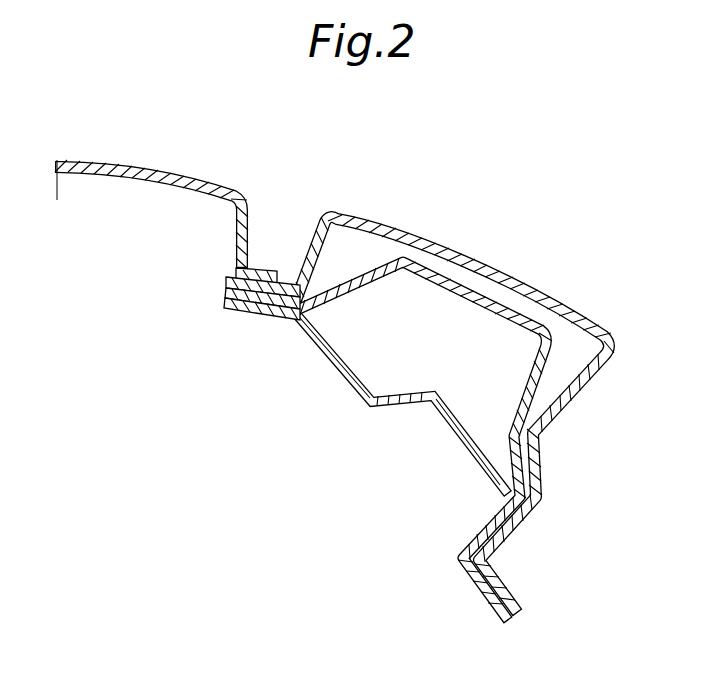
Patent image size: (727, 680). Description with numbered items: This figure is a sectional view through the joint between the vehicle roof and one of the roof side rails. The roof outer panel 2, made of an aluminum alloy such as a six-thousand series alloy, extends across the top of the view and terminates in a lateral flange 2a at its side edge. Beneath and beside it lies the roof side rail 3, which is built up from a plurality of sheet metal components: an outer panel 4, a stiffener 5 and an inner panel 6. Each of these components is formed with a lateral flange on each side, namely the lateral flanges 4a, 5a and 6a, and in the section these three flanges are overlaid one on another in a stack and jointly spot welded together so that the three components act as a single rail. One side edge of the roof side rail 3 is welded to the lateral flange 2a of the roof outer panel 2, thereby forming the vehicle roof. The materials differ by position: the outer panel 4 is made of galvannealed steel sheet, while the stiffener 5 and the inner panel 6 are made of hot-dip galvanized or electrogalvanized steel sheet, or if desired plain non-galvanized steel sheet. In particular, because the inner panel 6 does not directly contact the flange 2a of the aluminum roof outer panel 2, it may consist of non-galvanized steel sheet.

The roof outer panel 2 is at (128, 168).
The lateral flange of the roof outer panel 2a is at (263, 268).
The roof side rail 3 is at (393, 414).
The outer panel 4 is at (560, 310).
The lateral flange of the outer panel 4a is at (227, 279).
The stiffener 5 is at (553, 353).
The lateral flange of the stiffener 5a is at (227, 291).
The inner panel 6 is at (453, 430).
The lateral flange of the inner panel 6a is at (252, 311).